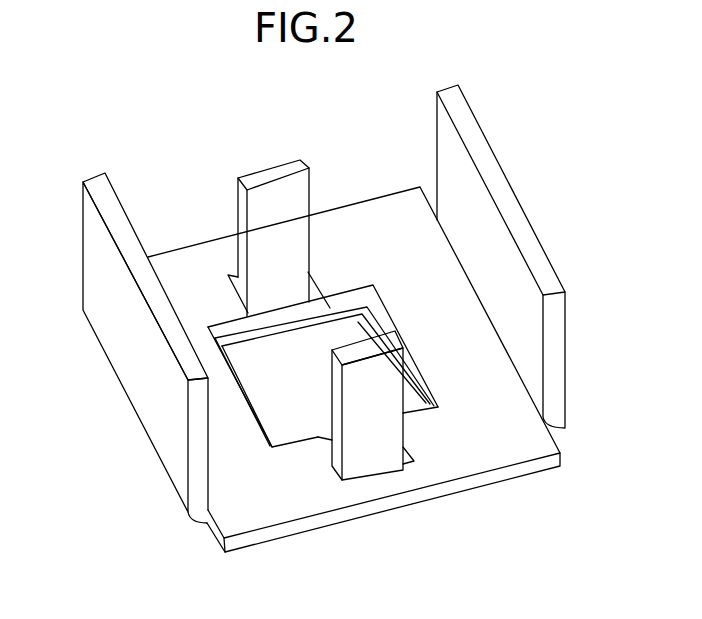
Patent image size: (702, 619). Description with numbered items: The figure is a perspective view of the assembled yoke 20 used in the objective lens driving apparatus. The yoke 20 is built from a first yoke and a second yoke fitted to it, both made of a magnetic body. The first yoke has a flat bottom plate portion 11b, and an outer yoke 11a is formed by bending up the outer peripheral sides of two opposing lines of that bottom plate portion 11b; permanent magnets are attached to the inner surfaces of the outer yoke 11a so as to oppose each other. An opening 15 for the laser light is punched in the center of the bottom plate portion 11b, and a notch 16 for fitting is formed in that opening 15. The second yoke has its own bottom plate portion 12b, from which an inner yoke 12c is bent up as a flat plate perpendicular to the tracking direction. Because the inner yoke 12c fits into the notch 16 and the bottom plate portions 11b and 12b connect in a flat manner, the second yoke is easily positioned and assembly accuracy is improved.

The yoke 20 is at (368, 133).
The outer yoke 11a is at (488, 240).
The bottom plate portion 11b is at (483, 458).
The bottom plate portion 12b is at (283, 312).
The inner yoke 12c is at (278, 203).
The opening 15 is at (280, 410).
The notch 16 is at (328, 438).